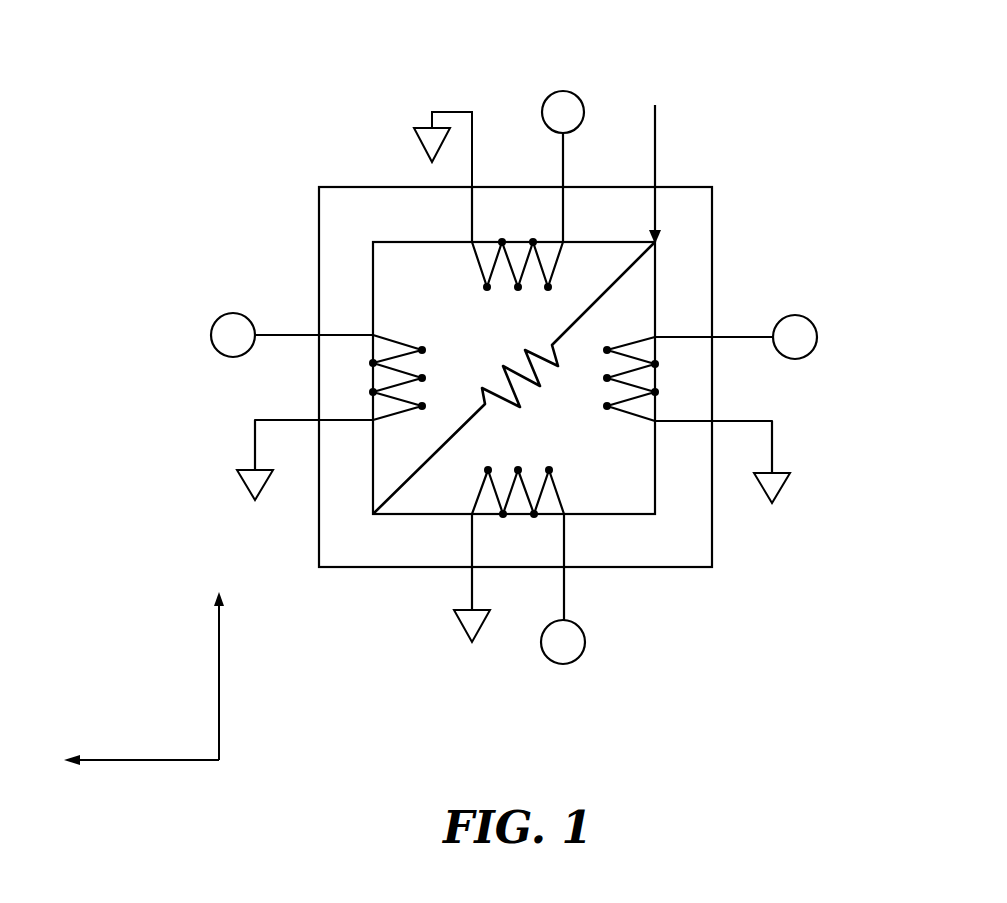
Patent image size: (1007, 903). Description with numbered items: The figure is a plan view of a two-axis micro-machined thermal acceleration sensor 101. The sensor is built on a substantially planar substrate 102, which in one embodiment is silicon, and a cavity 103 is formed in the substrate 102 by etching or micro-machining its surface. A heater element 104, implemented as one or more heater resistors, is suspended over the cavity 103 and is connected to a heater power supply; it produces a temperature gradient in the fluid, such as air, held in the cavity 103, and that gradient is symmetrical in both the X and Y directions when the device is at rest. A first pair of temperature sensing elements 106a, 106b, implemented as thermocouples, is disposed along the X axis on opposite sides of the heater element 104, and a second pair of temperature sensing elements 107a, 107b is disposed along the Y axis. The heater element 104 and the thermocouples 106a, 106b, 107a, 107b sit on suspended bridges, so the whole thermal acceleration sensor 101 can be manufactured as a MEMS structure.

The thermal acceleration sensor 101 is at (228, 122).
The substrate 102 is at (342, 187).
The cavity 103 is at (635, 567).
The heater element 104 is at (613, 288).
The temperature sensing element 106a is at (518, 291).
The temperature sensing element 106b is at (518, 463).
The temperature sensing element 107a is at (432, 370).
The temperature sensing element 107b is at (603, 381).